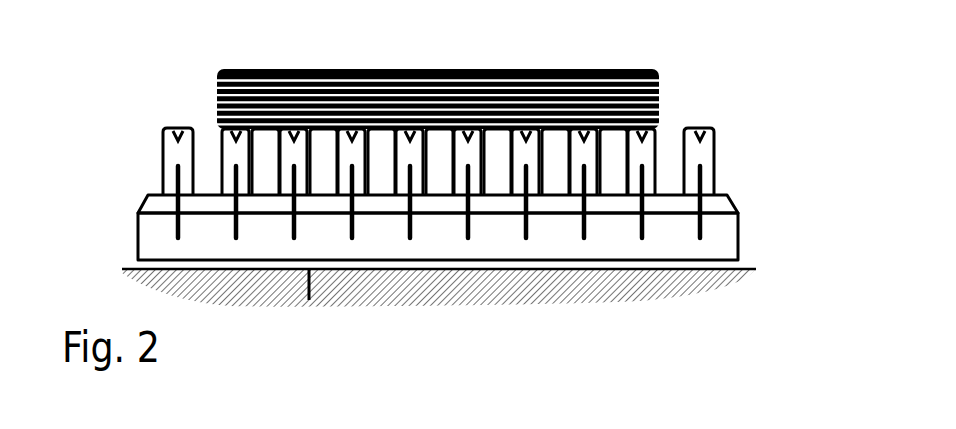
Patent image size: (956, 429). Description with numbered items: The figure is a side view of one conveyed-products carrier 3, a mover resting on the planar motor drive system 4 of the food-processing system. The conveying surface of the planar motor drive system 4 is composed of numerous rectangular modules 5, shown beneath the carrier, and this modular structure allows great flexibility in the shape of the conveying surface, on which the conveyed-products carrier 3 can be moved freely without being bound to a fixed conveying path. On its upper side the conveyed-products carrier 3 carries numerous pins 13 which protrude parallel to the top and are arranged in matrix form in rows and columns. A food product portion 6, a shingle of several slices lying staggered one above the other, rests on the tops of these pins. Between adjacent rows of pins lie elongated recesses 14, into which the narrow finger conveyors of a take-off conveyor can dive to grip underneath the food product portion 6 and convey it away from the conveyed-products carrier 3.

The conveyed-products carrier 3 is at (132, 208).
The planar motor drive system 4 is at (740, 288).
The rectangular module 5 is at (260, 292).
The food product portion 6 is at (356, 69).
The pin 13 is at (176, 153).
The elongated recess 14 is at (555, 172).